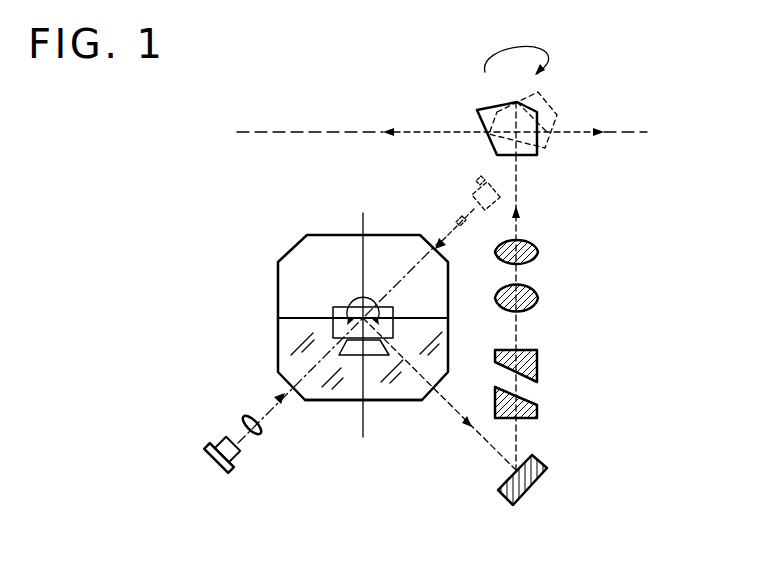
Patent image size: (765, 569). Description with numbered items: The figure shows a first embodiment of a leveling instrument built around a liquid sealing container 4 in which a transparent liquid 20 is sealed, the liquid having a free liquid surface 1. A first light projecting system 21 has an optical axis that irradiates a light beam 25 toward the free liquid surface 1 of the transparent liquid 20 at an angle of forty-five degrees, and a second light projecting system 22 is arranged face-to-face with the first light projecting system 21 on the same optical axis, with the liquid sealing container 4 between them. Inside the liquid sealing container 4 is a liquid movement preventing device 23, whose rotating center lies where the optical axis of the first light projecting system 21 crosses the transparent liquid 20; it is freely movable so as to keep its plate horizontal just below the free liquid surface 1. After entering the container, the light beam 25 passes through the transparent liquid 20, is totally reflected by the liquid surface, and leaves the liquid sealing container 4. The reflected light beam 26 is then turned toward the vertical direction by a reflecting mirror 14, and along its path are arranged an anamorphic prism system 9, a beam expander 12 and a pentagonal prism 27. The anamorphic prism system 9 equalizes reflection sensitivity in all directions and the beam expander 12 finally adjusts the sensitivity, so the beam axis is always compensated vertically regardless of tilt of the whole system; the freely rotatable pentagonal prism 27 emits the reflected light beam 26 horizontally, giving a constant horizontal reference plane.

The free liquid surface 1 is at (421, 318).
The liquid sealing container 4 is at (340, 402).
The anamorphic prism system 9 is at (550, 365).
The beam expander 12 is at (550, 248).
The reflecting mirror 14 is at (550, 492).
The transparent liquid 20 is at (398, 387).
The first light projecting system 21 is at (205, 437).
The second light projecting system 22 is at (439, 209).
The liquid movement preventing device 23 is at (343, 309).
The light beam 25 is at (263, 413).
The reflected light beam 26 is at (482, 438).
The pentagonal prism 27 is at (493, 98).